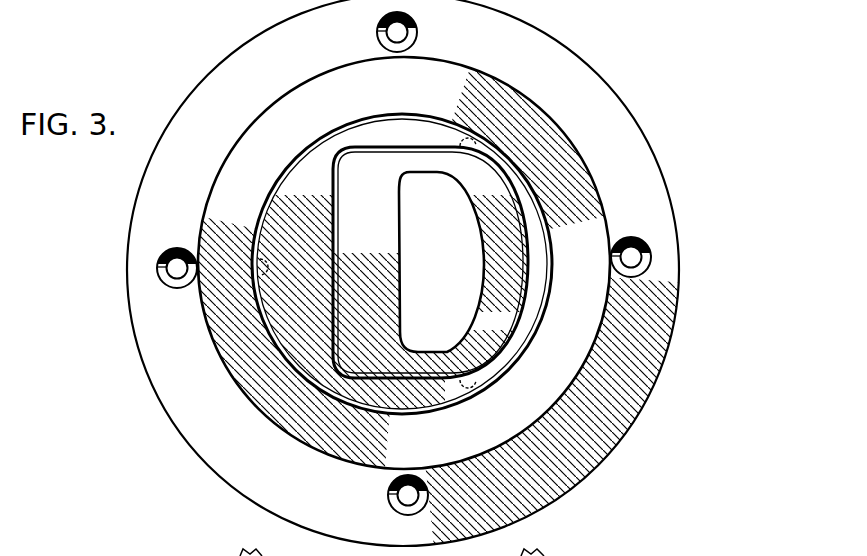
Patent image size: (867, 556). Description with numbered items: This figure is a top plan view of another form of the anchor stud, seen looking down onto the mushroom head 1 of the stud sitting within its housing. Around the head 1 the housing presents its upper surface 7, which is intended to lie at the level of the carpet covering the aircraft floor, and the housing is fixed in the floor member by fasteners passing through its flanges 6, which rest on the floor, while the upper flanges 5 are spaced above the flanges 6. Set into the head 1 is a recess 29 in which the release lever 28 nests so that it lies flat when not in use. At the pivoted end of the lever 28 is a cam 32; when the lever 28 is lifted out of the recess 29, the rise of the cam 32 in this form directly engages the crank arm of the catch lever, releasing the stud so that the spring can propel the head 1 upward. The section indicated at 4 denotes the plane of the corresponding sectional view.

The head 1 is at (300, 353).
The section line 4- 4 is at (403, 219).
The upper flanges 5 is at (594, 184).
The flanges 6 is at (672, 287).
The upper surface 7 is at (544, 400).
The lever 28 is at (512, 207).
The recess 29 is at (446, 397).
The cam 32 is at (387, 242).